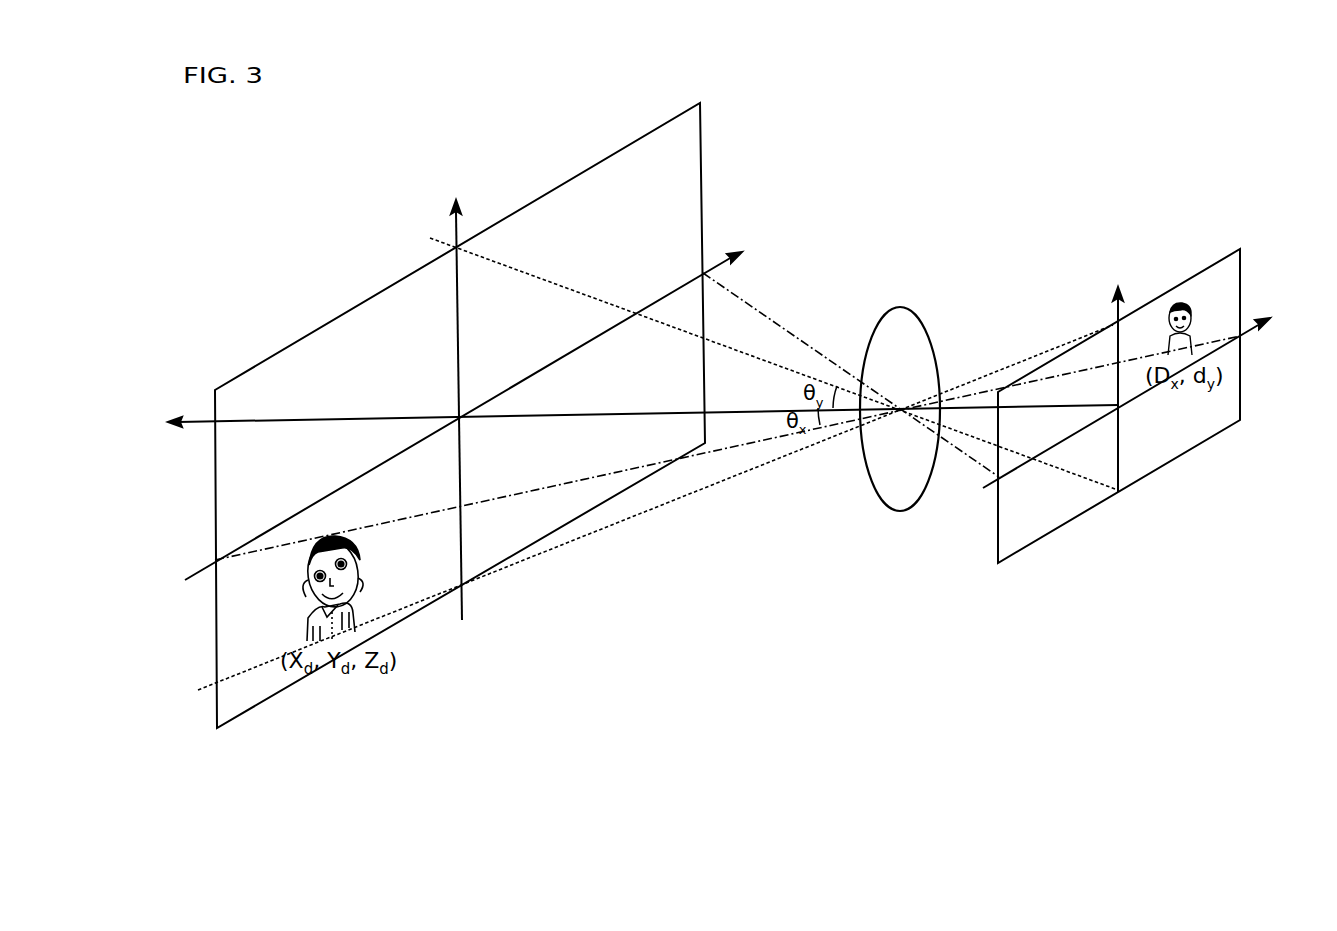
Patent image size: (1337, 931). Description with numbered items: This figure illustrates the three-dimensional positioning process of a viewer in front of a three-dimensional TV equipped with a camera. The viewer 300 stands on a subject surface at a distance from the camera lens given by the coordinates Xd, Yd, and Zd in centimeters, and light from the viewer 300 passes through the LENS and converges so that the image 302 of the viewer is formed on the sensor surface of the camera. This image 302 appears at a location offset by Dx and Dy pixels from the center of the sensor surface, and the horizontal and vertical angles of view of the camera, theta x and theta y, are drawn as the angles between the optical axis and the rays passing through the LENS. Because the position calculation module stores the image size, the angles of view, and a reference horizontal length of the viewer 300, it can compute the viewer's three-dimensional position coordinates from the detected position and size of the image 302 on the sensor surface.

The viewer 300 is at (358, 585).
The image of the viewer 302 is at (1180, 303).
The lens LENS is at (900, 425).